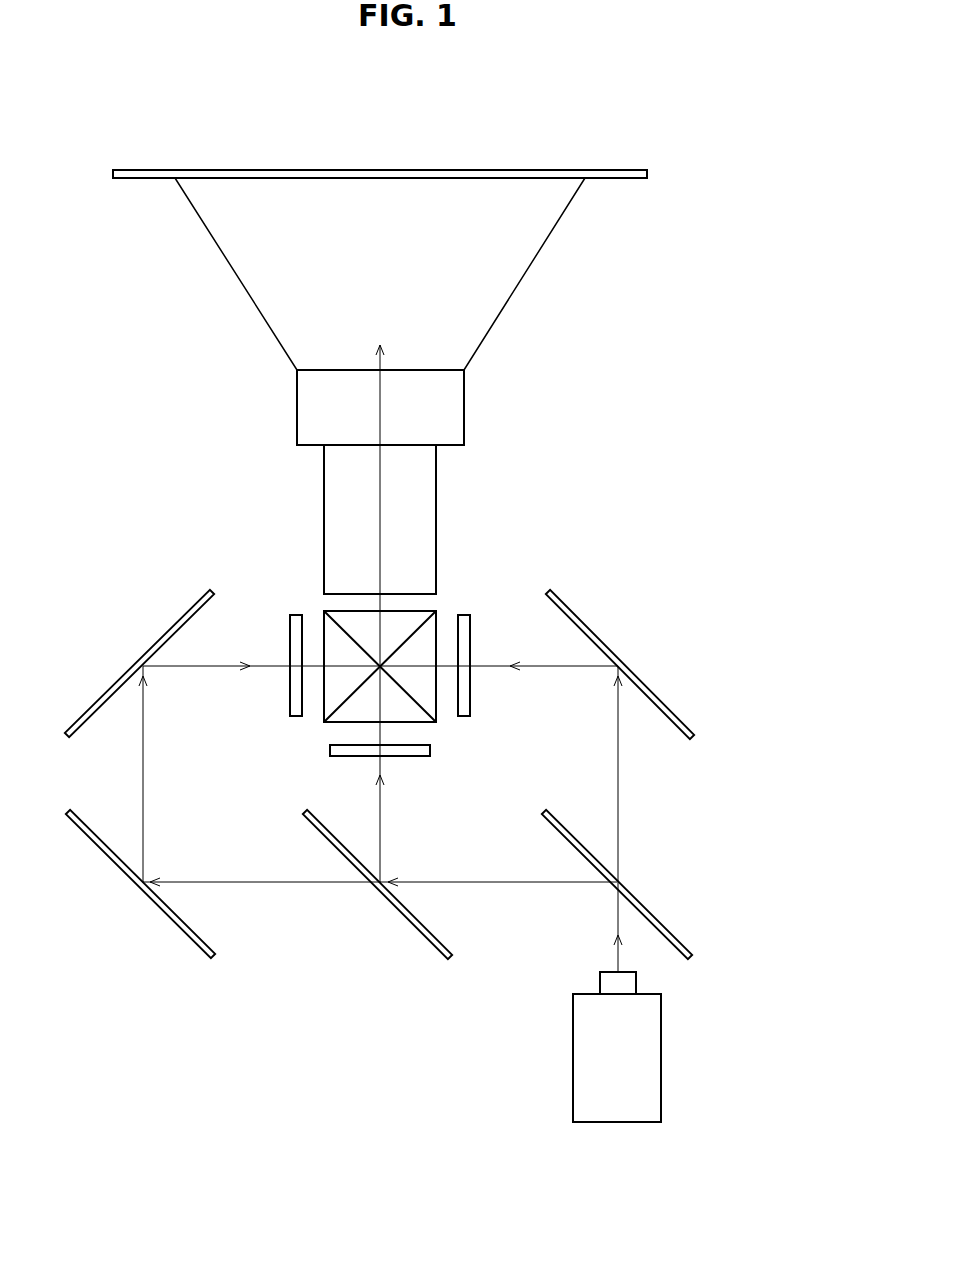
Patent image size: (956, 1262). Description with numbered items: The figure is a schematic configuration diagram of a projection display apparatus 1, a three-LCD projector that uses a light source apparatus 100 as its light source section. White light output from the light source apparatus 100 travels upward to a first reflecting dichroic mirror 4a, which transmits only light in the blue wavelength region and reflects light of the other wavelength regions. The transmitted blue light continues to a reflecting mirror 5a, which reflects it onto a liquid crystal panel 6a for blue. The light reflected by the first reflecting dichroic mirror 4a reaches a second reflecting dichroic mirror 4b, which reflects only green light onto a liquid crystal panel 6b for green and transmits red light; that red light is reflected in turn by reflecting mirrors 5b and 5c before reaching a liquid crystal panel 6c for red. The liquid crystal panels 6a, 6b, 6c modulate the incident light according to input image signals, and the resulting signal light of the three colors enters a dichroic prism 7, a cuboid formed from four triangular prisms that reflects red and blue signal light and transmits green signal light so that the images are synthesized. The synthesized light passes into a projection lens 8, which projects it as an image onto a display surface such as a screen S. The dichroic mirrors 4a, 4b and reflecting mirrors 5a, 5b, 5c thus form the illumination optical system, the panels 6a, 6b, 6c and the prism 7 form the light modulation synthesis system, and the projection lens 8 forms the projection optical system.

The projection display apparatus 1 is at (777, 238).
The screen S is at (648, 174).
The projection lens 8 is at (465, 405).
The dichroic prism 7 is at (324, 704).
The liquid crystal panel for blue 6a is at (465, 614).
The liquid crystal panel for green 6b is at (432, 750).
The liquid crystal panel for red 6c is at (297, 614).
The reflecting mirror 5a is at (621, 661).
The reflecting mirror 5b is at (140, 890).
The reflecting mirror 5c is at (140, 661).
The first reflecting dichroic mirror 4a is at (616, 888).
The second reflecting dichroic mirror 4b is at (377, 888).
The light source apparatus 100 is at (662, 1032).